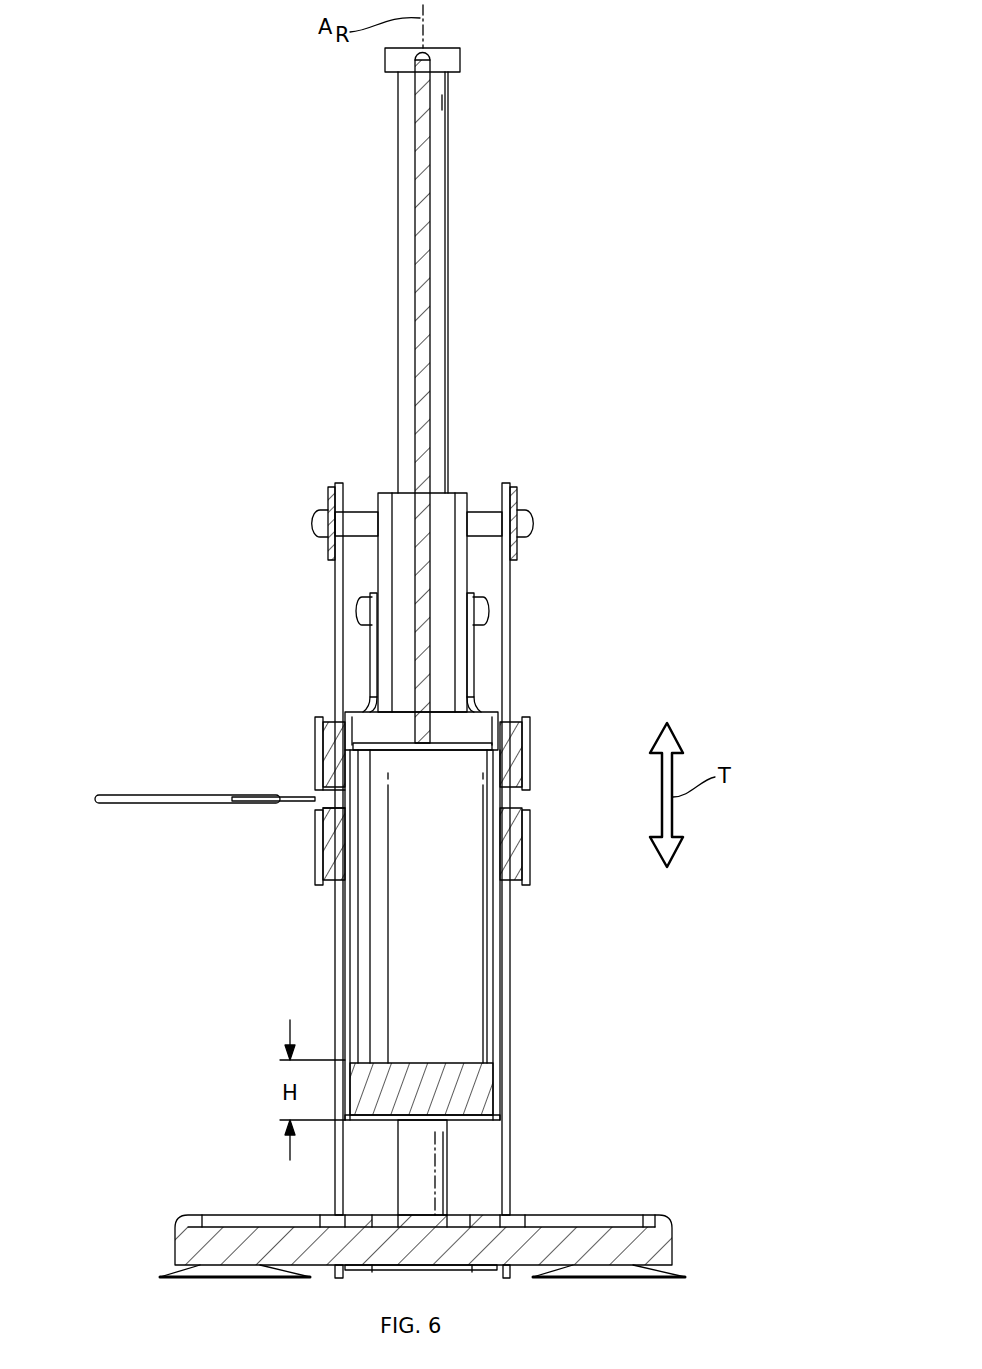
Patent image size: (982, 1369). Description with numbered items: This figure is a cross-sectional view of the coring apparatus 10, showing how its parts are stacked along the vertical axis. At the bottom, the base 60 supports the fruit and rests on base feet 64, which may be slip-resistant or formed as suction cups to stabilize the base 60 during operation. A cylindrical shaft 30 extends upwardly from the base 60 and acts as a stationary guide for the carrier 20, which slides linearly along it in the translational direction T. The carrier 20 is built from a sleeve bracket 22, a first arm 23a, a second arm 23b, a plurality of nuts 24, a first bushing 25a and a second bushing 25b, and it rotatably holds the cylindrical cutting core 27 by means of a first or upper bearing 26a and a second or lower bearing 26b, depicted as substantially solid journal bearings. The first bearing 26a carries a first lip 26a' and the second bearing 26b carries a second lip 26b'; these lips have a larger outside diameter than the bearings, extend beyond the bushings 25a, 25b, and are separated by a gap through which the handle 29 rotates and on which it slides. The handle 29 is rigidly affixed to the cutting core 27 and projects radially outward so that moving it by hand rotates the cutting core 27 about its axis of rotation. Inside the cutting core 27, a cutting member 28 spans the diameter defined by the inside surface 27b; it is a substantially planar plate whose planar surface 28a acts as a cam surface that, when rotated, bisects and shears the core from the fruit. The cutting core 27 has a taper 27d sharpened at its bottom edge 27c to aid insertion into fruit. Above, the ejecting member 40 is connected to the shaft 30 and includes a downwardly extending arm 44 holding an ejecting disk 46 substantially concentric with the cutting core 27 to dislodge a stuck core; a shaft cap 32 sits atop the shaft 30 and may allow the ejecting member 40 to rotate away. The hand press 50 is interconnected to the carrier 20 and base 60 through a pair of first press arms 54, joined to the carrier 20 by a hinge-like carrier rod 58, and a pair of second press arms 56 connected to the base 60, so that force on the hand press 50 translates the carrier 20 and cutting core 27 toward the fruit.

The coring apparatus 10 is at (184, 262).
The carrier 20 is at (551, 703).
The sleeve bracket 22 is at (441, 505).
The first arm 23a is at (525, 757).
The second arm 23b is at (525, 840).
The nuts 24 is at (360, 610).
The first bushing 25a is at (528, 735).
The second bushing 25b is at (528, 855).
The first bearing 26a is at (287, 745).
The first lip 26a' is at (277, 772).
The second bearing 26b is at (286, 853).
The second lip 26b' is at (272, 823).
The cylindrical cutting core 27 is at (372, 1025).
The inside surface 27b is at (447, 936).
The bottom edge 27c is at (355, 1122).
The taper 27d is at (498, 1105).
The cutting member 28 is at (487, 1083).
The planar surface 28a is at (455, 1101).
The handle 29 is at (100, 795).
The cylindrical shaft 30 is at (441, 141).
The shaft cap 32 is at (448, 43).
The ejecting member 40 is at (392, 182).
The downwardly extending arm 44 is at (420, 228).
The ejecting disk 46 is at (383, 742).
The hand press 50 is at (548, 504).
The first press arms 54 is at (328, 500).
The second press arms 56 is at (338, 572).
The carrier rod 58 is at (362, 518).
The base 60 is at (650, 1240).
The base feet 64 is at (200, 1275).